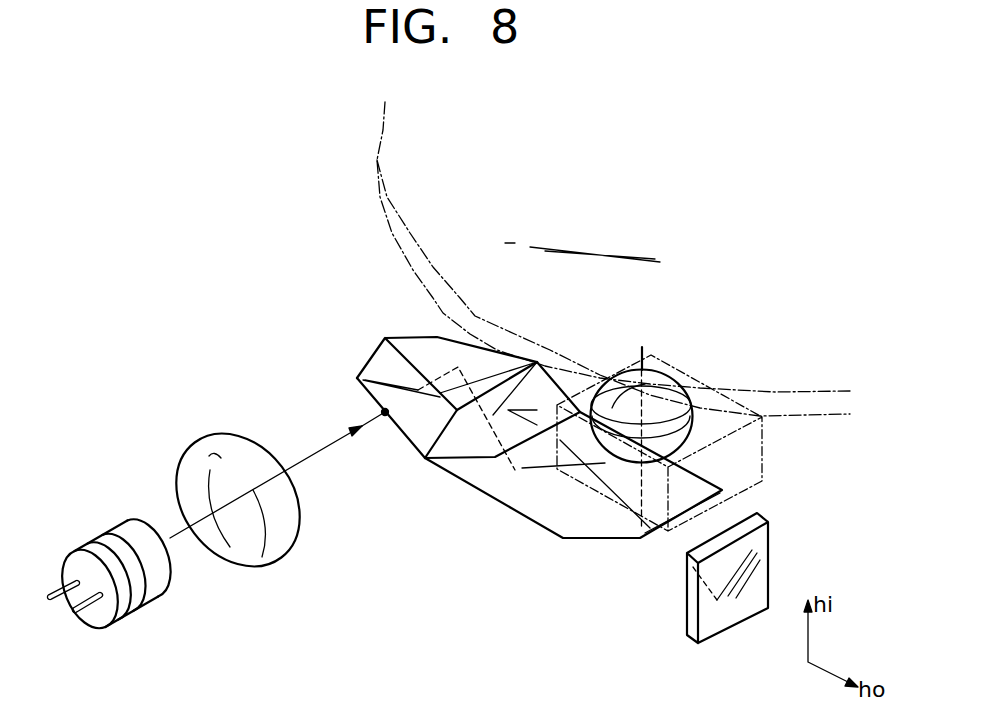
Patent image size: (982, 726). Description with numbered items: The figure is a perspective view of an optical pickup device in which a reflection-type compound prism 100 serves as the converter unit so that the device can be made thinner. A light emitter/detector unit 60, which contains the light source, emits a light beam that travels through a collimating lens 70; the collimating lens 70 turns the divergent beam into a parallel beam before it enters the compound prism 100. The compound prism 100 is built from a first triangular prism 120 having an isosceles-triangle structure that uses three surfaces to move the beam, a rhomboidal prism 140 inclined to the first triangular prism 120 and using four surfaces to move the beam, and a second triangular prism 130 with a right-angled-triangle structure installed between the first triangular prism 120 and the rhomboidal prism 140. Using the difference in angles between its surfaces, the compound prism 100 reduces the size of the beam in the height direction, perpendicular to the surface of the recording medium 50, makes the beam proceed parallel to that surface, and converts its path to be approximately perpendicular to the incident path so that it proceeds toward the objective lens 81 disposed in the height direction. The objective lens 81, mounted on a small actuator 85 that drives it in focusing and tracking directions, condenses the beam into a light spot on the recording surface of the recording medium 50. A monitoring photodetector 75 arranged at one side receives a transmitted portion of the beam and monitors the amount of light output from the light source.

The recording medium 50 is at (377, 160).
The light emitter/detector unit 60 is at (151, 615).
The collimating lens 70 is at (270, 553).
The monitoring photodetector 75 is at (762, 568).
The objective lens 81 is at (690, 447).
The actuator 85 is at (764, 437).
The reflection-type compound prism 100 is at (350, 347).
The first triangular prism 120 is at (432, 352).
The second triangular prism 130 is at (469, 445).
The rhomboidal prism 140 is at (545, 508).